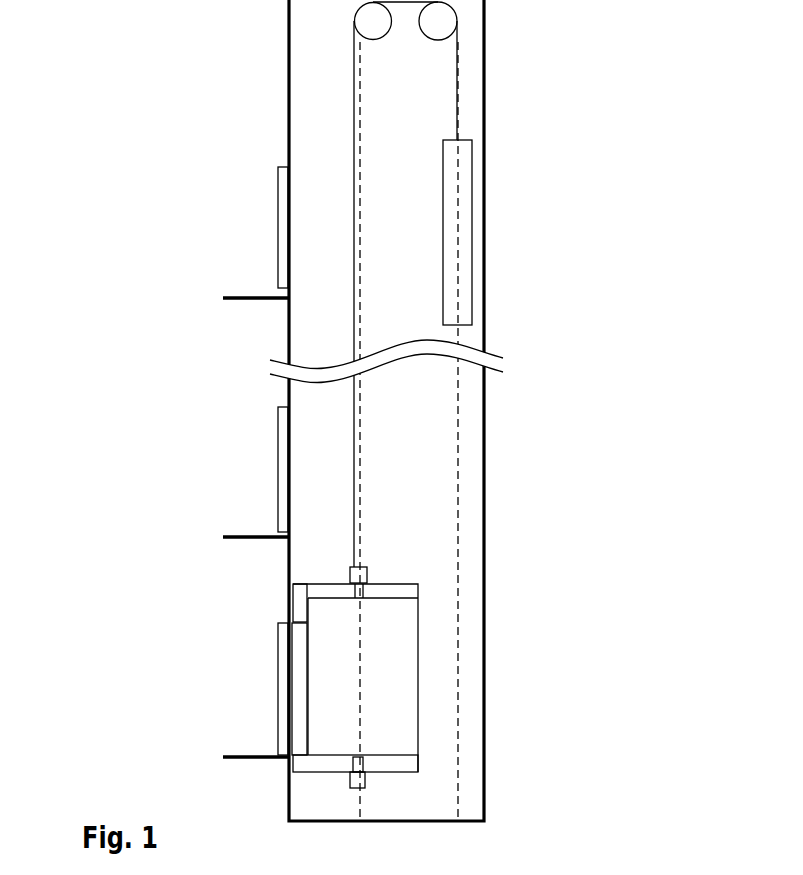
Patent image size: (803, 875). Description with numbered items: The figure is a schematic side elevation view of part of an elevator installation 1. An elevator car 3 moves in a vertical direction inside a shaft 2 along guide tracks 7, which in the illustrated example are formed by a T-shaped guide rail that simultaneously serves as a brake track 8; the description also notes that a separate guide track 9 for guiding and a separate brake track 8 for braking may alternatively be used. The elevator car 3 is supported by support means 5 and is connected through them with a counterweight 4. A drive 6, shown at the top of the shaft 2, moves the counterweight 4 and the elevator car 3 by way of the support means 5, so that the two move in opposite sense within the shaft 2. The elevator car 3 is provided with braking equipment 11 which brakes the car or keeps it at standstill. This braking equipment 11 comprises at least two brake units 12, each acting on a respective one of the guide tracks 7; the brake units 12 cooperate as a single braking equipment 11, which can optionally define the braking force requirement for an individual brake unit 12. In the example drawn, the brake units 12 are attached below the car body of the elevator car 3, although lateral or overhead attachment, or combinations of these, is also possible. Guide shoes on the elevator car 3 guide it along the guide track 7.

The elevator installation 1 is at (359, 410).
The shaft 2 is at (315, 82).
The elevator car 3 is at (478, 626).
The counterweight 4 is at (465, 190).
The support means 5 is at (353, 170).
The drive 6 is at (373, 8).
The guide track 7 is at (260, 431).
The brake track 8 is at (360, 222).
The guide track 9 is at (363, 757).
The braking equipment 11 is at (507, 742).
The brake unit 12 is at (363, 782).